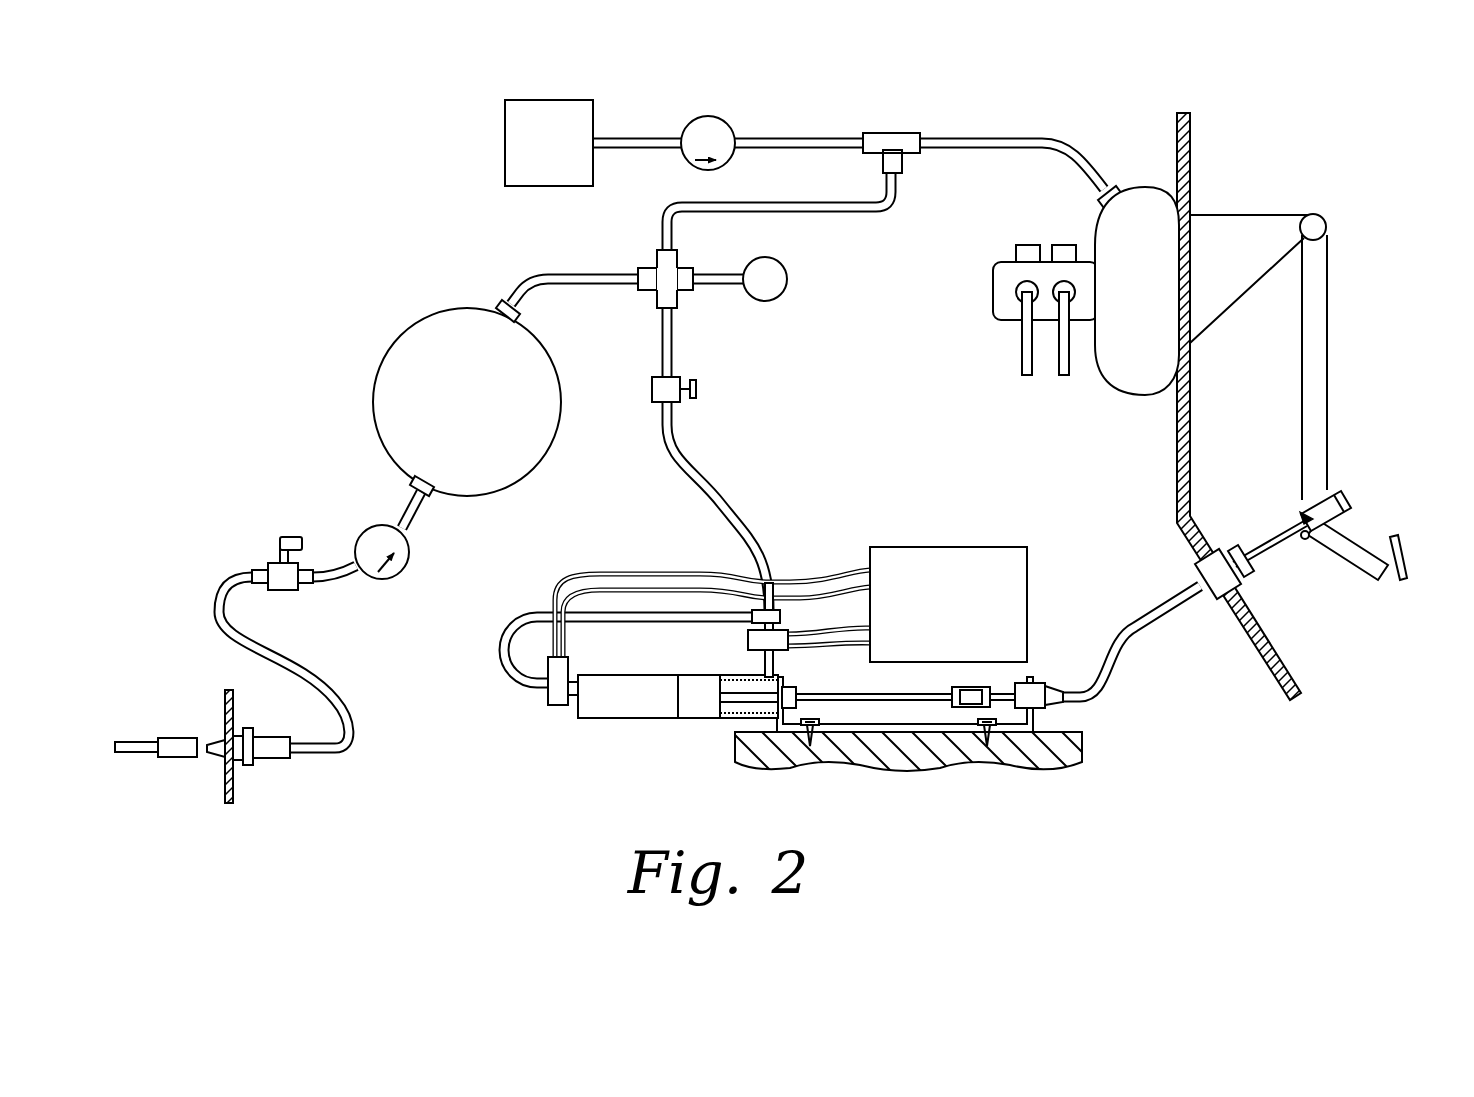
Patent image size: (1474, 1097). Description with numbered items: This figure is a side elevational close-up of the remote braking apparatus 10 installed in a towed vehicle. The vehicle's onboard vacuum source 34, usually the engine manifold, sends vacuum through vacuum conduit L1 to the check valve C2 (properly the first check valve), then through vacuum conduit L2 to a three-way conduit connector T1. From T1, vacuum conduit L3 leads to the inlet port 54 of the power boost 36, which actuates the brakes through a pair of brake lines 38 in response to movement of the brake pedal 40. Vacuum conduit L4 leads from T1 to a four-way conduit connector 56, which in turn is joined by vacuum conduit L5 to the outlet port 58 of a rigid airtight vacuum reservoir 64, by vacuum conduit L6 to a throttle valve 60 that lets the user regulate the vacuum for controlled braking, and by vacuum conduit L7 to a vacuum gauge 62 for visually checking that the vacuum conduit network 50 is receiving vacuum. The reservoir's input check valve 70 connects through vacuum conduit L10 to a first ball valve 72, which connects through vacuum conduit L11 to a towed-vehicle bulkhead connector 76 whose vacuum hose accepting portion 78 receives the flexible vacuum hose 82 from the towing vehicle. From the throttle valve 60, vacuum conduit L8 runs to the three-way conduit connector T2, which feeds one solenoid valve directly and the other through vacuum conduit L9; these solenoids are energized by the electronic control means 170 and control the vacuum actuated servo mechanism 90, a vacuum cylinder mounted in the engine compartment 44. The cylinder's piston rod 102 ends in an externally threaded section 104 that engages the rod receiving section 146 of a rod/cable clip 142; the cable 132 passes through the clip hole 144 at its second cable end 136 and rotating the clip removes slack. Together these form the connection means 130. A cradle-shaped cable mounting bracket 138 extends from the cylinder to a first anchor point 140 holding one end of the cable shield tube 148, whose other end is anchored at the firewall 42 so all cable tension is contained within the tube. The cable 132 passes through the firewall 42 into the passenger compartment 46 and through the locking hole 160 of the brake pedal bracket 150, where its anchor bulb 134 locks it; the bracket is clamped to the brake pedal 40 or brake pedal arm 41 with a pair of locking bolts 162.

The remote braking apparatus 10 is at (416, 222).
The onboard vacuum source 34 is at (540, 100).
The power boost 36 is at (1119, 301).
The brake lines 38 is at (1058, 337).
The brake pedal 40 is at (1412, 550).
The brake pedal arm 41 is at (1327, 333).
The firewall 42 is at (1255, 665).
The engine compartment 44 is at (882, 414).
The passenger compartment 46 is at (1357, 221).
The vacuum conduit network 50 is at (892, 120).
The inlet port 54 is at (1108, 185).
The four-way conduit connector 56 is at (650, 295).
The outlet port 58 is at (497, 305).
The throttle valve 60 is at (680, 400).
The vacuum gauge 62 is at (783, 293).
The vacuum reservoir 64 is at (444, 414).
The input check valve 70 is at (400, 577).
The first ball valve 72 is at (275, 563).
The towed-vehicle bulkhead connector 76 is at (268, 760).
The vacuum hose accepting portion 78 is at (215, 753).
The vacuum hose 82 is at (145, 738).
The vacuum actuated servo mechanism 90 is at (615, 735).
The piston rod 102 is at (832, 705).
The externally threaded section 104 is at (912, 705).
The connection means 130 is at (1130, 675).
The cable 132 is at (1032, 707).
The anchor bulb 134 is at (1305, 538).
The second cable end 136 is at (1003, 692).
The cable mounting bracket 138 is at (867, 712).
The first anchor point 140 is at (1040, 705).
The rod/cable clip 142 is at (975, 693).
The clip hole 144 is at (970, 705).
The rod receiving section 146 is at (957, 690).
The cable shield tube 148 is at (1138, 618).
The brake pedal bracket 150 is at (1347, 527).
The locking hole 160 is at (1307, 517).
The locking bolts 162 is at (1343, 497).
The electronic control means 170 is at (905, 619).
The vacuum conduit L1 is at (642, 138).
The vacuum conduit L2 is at (808, 138).
The vacuum conduit L3 is at (1022, 138).
The vacuum conduit L4 is at (837, 217).
The vacuum conduit L5 is at (588, 268).
The vacuum conduit L6 is at (673, 340).
The vacuum conduit L7 is at (722, 268).
The vacuum conduit L8 is at (733, 508).
The vacuum conduit L9 is at (497, 655).
The vacuum conduit L10 is at (342, 583).
The vacuum conduit L11 is at (340, 750).
The first check valve C2 is at (725, 117).
The three-way conduit connector T1 is at (912, 133).
The three-way conduit connector T2 is at (797, 585).